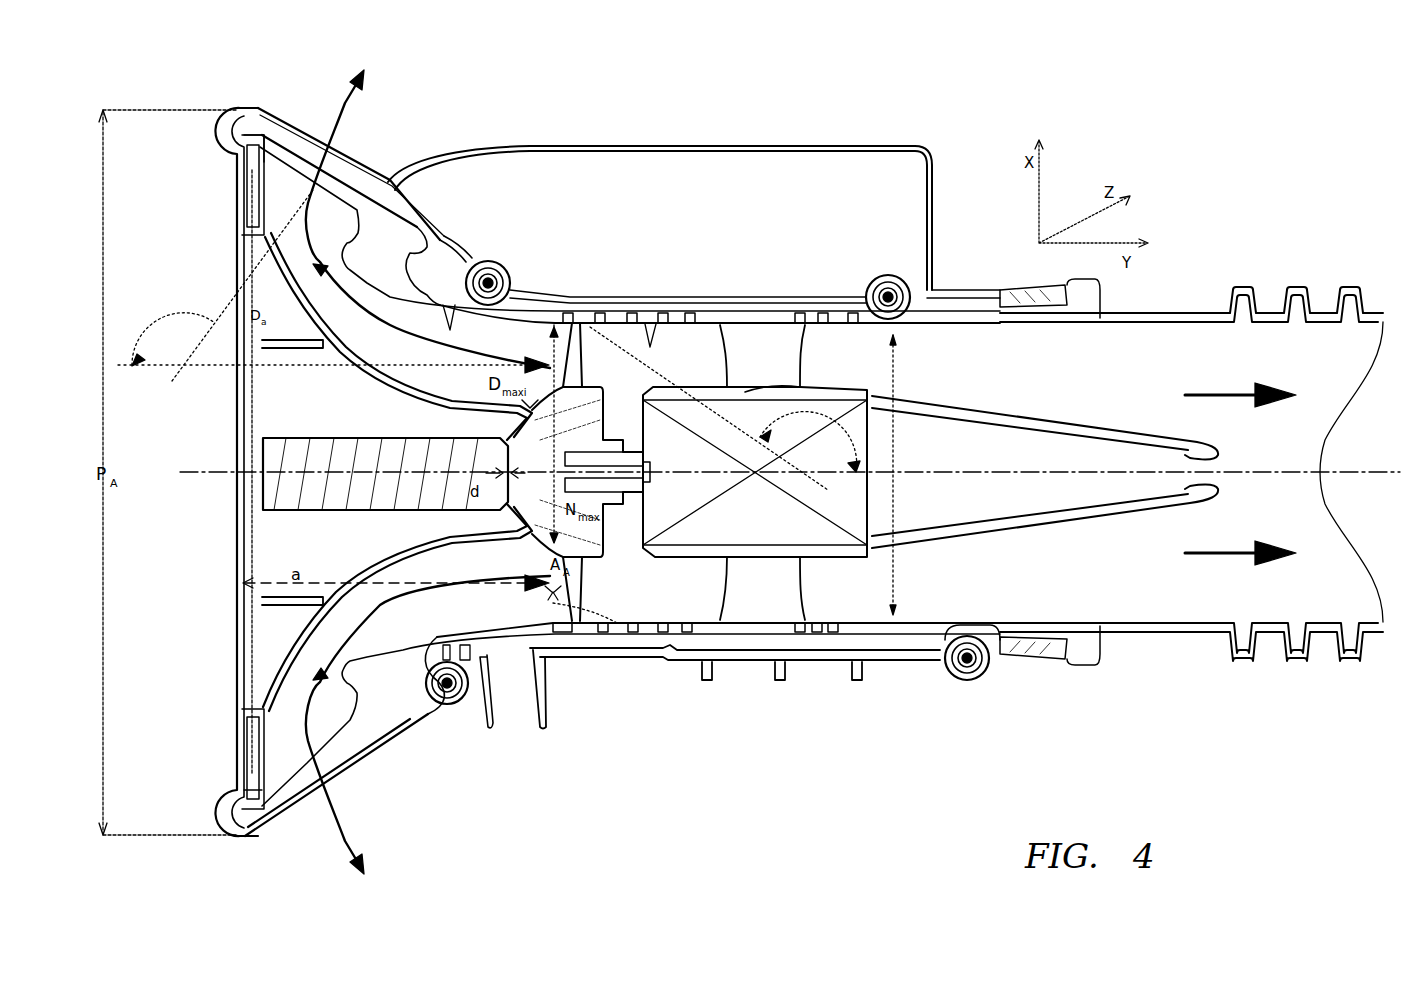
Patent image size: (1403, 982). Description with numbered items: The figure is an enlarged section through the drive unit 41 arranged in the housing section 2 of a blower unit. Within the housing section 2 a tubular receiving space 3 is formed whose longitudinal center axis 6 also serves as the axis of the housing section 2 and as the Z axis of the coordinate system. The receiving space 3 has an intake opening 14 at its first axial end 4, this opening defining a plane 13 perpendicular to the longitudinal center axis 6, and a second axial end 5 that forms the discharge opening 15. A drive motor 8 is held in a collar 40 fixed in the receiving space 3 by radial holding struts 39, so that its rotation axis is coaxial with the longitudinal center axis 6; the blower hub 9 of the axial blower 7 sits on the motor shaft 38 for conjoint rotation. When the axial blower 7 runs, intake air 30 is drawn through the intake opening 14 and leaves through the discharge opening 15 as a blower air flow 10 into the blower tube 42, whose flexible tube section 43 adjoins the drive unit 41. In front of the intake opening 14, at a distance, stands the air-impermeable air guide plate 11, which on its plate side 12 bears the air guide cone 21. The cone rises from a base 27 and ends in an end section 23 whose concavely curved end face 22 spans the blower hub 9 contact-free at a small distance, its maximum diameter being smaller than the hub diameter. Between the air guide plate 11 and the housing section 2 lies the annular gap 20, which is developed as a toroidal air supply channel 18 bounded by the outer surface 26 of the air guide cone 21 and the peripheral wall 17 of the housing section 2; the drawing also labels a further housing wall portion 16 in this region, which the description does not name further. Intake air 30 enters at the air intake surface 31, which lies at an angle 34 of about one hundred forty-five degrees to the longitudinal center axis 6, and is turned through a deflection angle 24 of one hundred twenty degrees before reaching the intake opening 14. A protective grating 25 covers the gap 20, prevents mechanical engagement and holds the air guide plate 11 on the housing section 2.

The housing section 2 is at (951, 266).
The receiving space 3 is at (901, 572).
The first axial end 4 is at (570, 350).
The second axial end 5 is at (888, 612).
The longitudinal center axis 6 is at (1142, 470).
The axial blower 7 is at (590, 390).
The drive motor 8 is at (838, 597).
The blower hub 9 is at (503, 600).
The blower air flow 10 is at (1254, 300).
The air guide plate 11 is at (237, 678).
The plate side 12 is at (268, 555).
The plane 13 is at (603, 625).
The intake opening 14 is at (641, 625).
The discharge opening 15 is at (928, 600).
The outer housing wall 16 is at (530, 320).
The peripheral wall 17 is at (449, 303).
The air supply channel 18 is at (349, 297).
The gap 20 is at (293, 165).
The air guide cone 21 is at (390, 660).
The end face 22 is at (701, 640).
The end section 23 is at (478, 428).
The deflection angle 24 is at (160, 310).
The protective grating 25 is at (340, 767).
The outer surface 26 is at (398, 237).
The base 27 is at (268, 728).
The intake air 30 is at (348, 96).
The air intake surface 31 is at (256, 112).
The angle 34 is at (818, 420).
The motor shaft 38 is at (653, 645).
The radial holding struts 39 is at (772, 360).
The collar 40 is at (748, 380).
The drive unit 41 is at (722, 310).
The blower tube 42 is at (1343, 258).
The flexible tube section 43 is at (1278, 605).